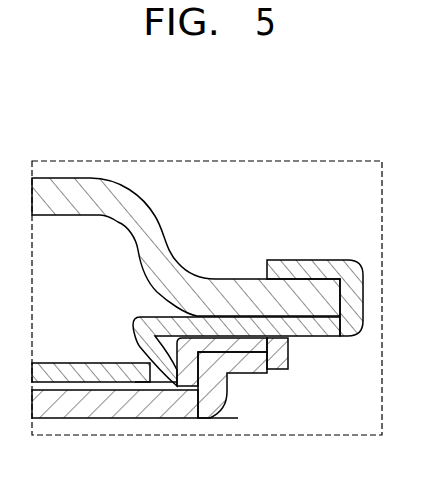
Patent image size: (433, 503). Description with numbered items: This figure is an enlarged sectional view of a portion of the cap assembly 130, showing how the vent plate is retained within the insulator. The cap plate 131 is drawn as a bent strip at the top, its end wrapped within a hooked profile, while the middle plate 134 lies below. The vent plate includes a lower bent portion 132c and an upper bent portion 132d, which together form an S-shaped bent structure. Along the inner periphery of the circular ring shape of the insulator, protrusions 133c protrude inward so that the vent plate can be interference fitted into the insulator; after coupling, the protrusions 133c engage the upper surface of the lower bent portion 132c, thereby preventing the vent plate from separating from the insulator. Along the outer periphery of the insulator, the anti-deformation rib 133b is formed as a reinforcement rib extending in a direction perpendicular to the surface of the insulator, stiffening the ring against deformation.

The cap assembly 130 is at (285, 188).
The cap plate 131 is at (65, 180).
The lower bent portion 132c is at (153, 382).
The upper bent portion 132d is at (137, 323).
The anti-deformation rib 133b is at (290, 353).
The protrusions 133c is at (197, 350).
The middle plate 134 is at (248, 368).